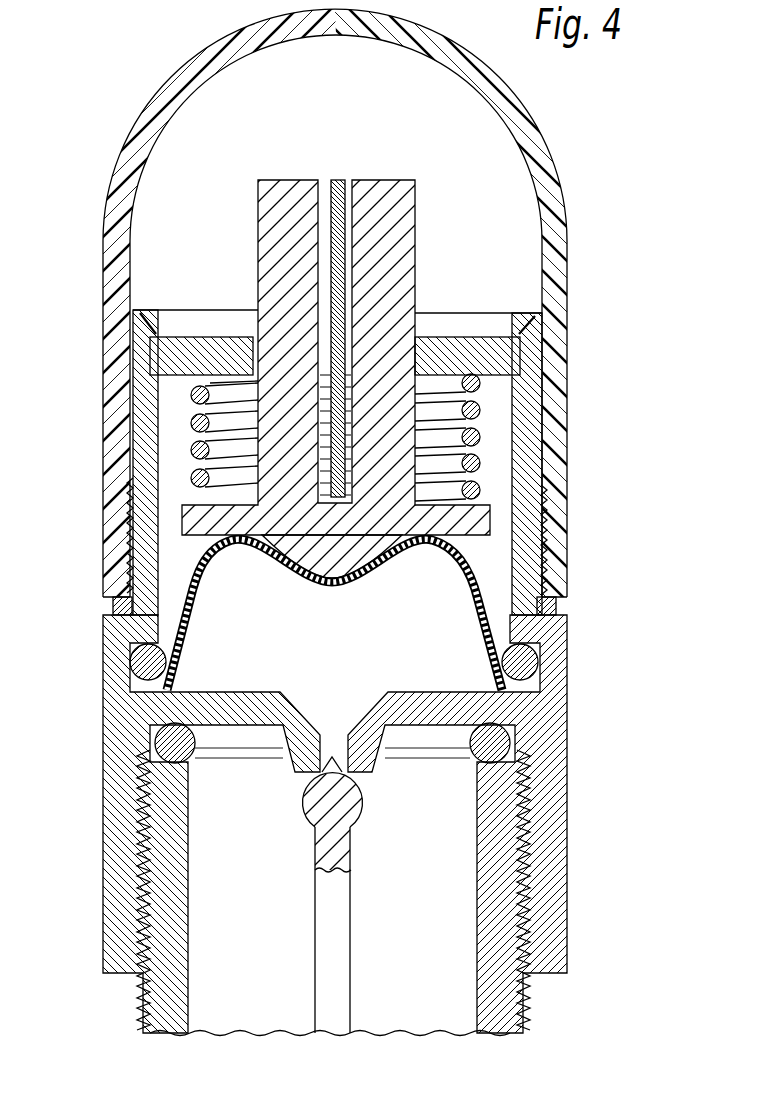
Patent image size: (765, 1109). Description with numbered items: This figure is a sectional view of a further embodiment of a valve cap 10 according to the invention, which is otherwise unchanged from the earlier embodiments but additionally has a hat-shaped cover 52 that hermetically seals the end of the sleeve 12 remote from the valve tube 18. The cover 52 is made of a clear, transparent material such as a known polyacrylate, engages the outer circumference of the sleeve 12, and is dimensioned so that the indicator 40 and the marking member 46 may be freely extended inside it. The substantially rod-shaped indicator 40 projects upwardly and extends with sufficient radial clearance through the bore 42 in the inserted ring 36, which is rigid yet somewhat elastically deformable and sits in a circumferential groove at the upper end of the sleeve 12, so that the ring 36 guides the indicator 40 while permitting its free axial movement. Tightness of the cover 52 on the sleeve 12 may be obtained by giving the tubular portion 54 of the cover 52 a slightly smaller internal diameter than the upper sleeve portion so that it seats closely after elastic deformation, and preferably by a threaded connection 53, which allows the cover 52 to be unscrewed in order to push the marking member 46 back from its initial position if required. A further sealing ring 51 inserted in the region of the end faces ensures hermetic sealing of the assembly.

The valve cap 10 is at (94, 642).
The sleeve 12 is at (146, 545).
The valve tube 18 is at (165, 815).
The inserted ring 36 is at (436, 358).
The indicator 40 is at (407, 228).
The bore 42 is at (255, 345).
The marking member 46 is at (338, 190).
The sealing ring 51 is at (105, 600).
The hat-shaped cover 52 is at (115, 132).
The threaded connection 53 is at (128, 505).
The tubular portion 54 is at (110, 430).